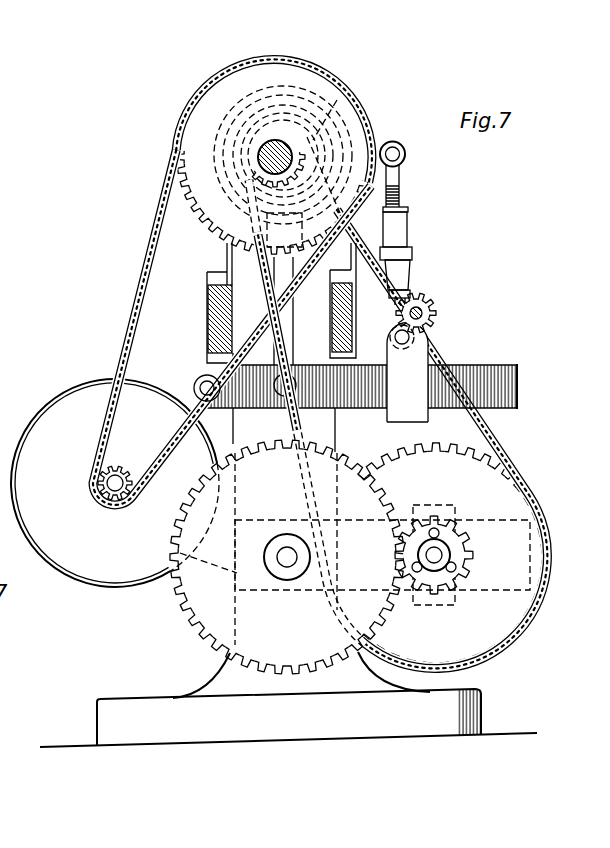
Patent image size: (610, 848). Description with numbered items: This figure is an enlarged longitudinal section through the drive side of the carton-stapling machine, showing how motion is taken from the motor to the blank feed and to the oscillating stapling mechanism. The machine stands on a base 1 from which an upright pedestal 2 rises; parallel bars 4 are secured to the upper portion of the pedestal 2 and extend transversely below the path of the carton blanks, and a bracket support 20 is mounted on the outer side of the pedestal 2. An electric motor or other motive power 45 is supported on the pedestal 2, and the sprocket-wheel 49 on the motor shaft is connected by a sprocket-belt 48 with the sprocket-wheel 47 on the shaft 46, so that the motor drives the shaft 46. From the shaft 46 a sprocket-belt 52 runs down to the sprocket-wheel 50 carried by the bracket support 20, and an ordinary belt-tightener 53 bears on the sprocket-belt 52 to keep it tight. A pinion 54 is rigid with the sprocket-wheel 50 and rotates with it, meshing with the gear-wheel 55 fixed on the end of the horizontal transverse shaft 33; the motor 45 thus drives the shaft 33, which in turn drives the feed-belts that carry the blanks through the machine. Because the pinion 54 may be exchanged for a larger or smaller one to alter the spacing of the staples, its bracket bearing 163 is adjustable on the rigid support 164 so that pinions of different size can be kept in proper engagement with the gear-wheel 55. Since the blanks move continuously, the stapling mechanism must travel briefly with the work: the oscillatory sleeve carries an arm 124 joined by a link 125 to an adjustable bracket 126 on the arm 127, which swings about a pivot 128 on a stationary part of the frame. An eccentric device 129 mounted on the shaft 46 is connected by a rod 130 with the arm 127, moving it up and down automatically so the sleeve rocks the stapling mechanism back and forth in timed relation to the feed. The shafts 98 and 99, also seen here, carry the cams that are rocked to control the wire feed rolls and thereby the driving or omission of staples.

The base 1 is at (252, 731).
The upright pedestal 2 is at (328, 438).
The parallel bars 4 is at (207, 300).
The bracket support 20 is at (273, 590).
The shaft 33 is at (284, 548).
The electric motor 45 is at (114, 483).
The shaft 46 is at (258, 150).
The sprocket-wheel 47 is at (193, 187).
The sprocket-belt 48 is at (127, 334).
The sprocket-wheel 49 is at (120, 467).
The sprocket-wheel 50 is at (497, 482).
The sprocket-belt 52 is at (435, 365).
The belt-tightener 53 is at (432, 298).
The pinion 54 is at (460, 537).
The gear-wheel 55 is at (370, 500).
The shaft 98 is at (348, 224).
The shaft 99 is at (352, 242).
The arm 124 is at (392, 141).
The link 125 is at (403, 225).
The adjustable bracket 126 is at (413, 410).
The arm 127 is at (500, 373).
The pivot 128 is at (203, 375).
The eccentric device 129 is at (327, 118).
The rod 130 is at (288, 337).
The bracket bearing 163 is at (457, 603).
The rigid support 164 is at (543, 518).